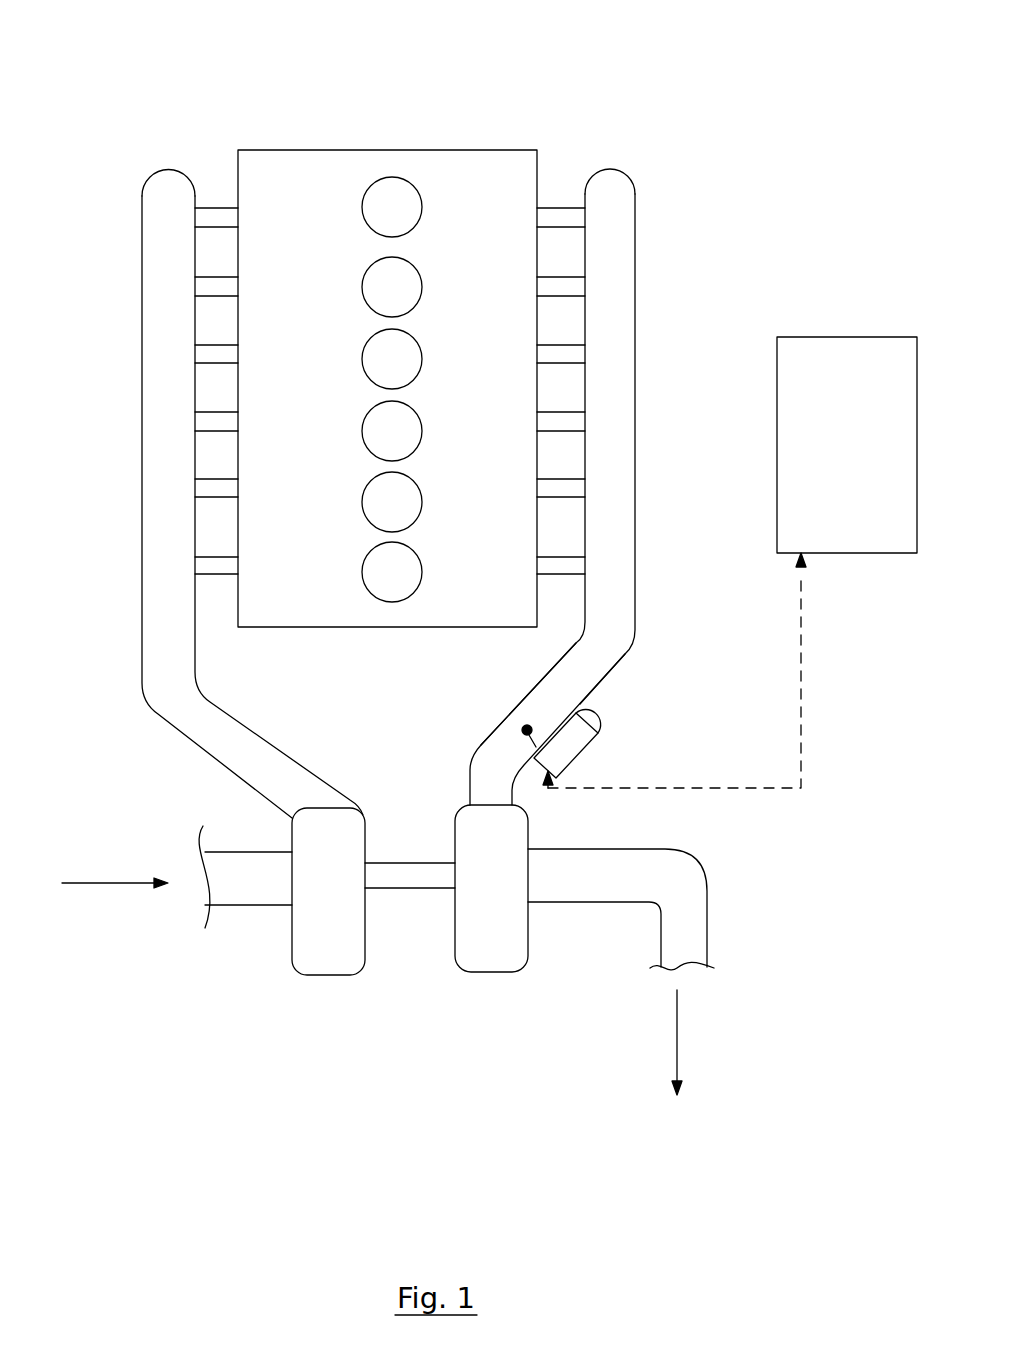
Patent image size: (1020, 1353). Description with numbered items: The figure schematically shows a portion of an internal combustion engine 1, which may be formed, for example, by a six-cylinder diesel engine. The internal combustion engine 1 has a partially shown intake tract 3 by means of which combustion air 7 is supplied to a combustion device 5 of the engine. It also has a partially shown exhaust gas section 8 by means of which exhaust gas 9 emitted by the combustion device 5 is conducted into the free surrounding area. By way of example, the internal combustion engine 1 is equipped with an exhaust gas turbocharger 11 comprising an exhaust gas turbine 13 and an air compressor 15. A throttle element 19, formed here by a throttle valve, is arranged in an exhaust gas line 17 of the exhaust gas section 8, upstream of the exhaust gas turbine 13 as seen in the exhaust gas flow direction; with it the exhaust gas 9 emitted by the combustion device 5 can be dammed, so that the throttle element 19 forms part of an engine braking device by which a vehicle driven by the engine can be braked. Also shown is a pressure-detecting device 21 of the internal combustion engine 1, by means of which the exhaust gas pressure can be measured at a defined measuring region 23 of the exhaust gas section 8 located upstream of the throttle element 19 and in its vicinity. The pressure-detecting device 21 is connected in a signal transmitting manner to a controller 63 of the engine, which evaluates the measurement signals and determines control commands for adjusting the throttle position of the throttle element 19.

The internal combustion engine 1 is at (404, 120).
The intake tract 3 is at (95, 166).
The combustion device 5 is at (507, 162).
The combustion air 7 is at (112, 883).
The exhaust gas section 8 is at (660, 186).
The exhaust gas 9 is at (680, 1030).
The exhaust gas turbocharger 11 is at (410, 976).
The exhaust gas turbine 13 is at (505, 948).
The air compressor 15 is at (323, 975).
The exhaust gas line 17 is at (615, 657).
The throttle element 19 is at (522, 718).
The pressure-detecting device 21 is at (586, 739).
The measuring region 23 is at (518, 676).
The controller 63 is at (819, 357).